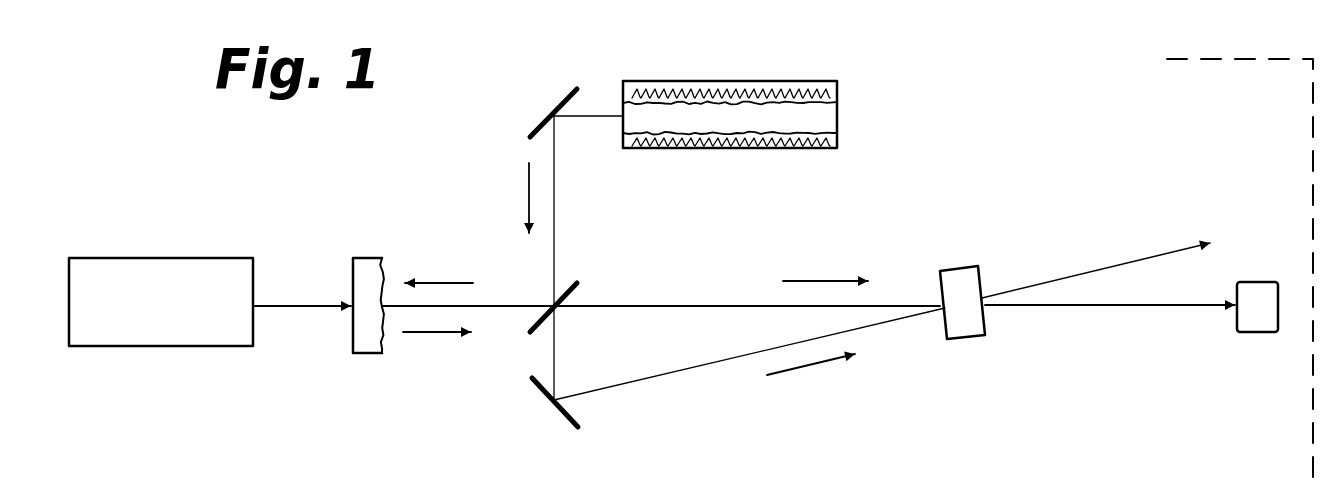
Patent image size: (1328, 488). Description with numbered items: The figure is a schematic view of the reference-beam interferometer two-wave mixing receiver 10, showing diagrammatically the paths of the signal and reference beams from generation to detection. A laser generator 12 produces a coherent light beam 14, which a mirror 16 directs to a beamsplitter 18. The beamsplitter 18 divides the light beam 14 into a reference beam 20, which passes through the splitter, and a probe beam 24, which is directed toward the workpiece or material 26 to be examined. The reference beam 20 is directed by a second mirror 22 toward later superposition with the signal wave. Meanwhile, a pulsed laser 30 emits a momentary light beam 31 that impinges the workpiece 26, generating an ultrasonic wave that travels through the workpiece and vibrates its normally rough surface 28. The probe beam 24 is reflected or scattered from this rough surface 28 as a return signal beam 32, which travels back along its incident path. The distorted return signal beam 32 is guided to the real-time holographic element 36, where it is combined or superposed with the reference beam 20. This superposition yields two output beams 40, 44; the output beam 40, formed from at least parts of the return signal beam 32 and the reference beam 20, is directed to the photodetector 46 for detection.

The reference-beam interferometer two-wave mixing receiver 10 is at (693, 70).
The laser generator 12 is at (837, 138).
The coherent light beam 14 is at (556, 205).
The mirror 16 is at (545, 112).
The beamsplitter 18 is at (575, 281).
The reference beam 20 is at (556, 355).
The mirror 22 is at (560, 412).
The probe beam 24 is at (452, 280).
The workpiece 26 is at (366, 258).
The rough surface 28 is at (383, 268).
The pulsed laser 30 is at (165, 258).
The momentary light beam 31 is at (286, 305).
The return signal beam 32 is at (438, 334).
The real-time holographic element 36 is at (938, 342).
The output beam 40 is at (1112, 307).
The output beam 44 is at (1063, 278).
The photodetector 46 is at (1265, 282).